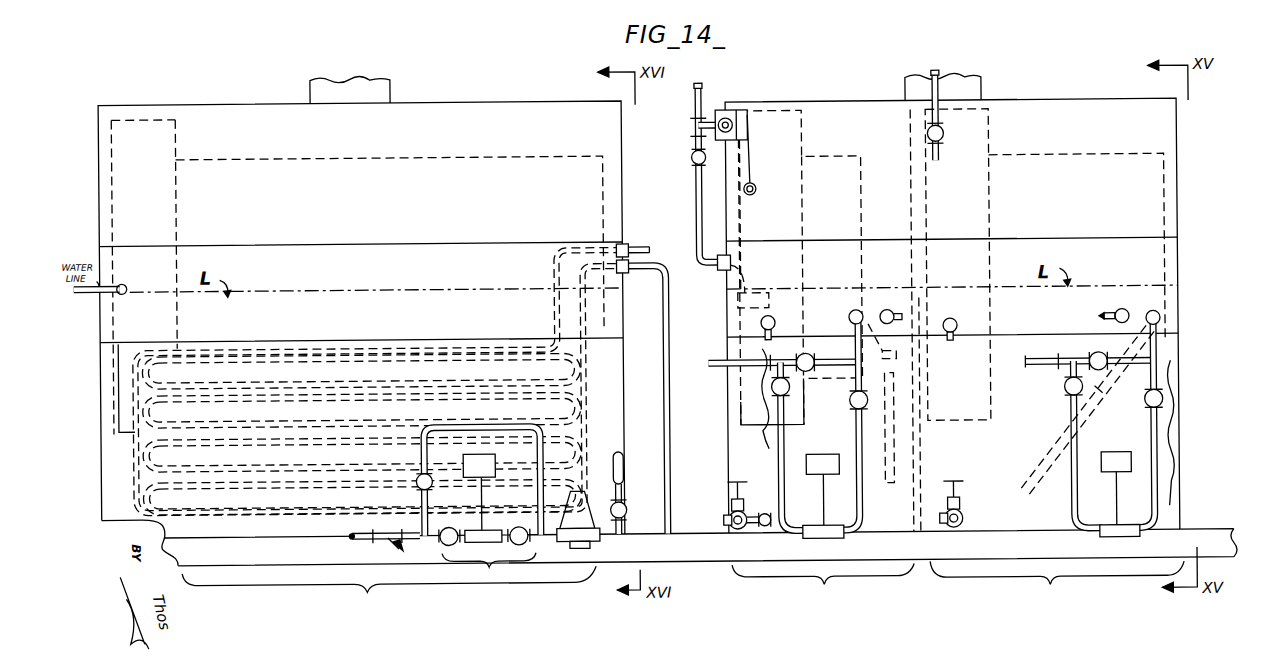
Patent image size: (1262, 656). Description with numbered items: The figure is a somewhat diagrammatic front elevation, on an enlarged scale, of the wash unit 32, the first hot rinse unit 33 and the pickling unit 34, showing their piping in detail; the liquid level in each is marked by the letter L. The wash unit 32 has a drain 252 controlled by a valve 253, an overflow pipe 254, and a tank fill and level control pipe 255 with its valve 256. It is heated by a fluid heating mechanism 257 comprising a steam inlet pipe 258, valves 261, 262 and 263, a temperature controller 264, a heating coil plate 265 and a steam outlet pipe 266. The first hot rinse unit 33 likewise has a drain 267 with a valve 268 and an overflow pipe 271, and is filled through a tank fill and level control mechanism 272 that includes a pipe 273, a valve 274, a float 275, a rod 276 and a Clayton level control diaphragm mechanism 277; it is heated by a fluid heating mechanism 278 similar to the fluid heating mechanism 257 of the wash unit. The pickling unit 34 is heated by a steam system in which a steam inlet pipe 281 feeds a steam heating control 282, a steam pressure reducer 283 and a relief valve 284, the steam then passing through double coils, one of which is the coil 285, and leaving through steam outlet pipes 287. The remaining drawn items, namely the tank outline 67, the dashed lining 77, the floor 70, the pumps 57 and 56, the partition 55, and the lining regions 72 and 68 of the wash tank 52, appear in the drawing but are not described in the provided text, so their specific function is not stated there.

The sulphuric acid pickle tank 67 is at (478, 101).
The tank lining 77 is at (401, 156).
The floor 70 is at (247, 529).
The double coil 285 is at (586, 391).
The steam outlet pipes 287 is at (652, 240).
The relief valve 284 is at (612, 457).
The steam pressure reducer 283 is at (598, 540).
The steam heating control 282 is at (478, 506).
The steam inlet pipe 281 is at (352, 540).
The hot detergent wash tank 52 is at (1058, 102).
The rinse compartment lining 72 is at (833, 156).
The wash compartment lining 68 is at (1055, 156).
The pipe 273 is at (696, 200).
The valve 274 is at (693, 162).
The tank fill and level control mechanism 272 is at (685, 110).
The Clayton level control diaphragm mechanism 277 is at (733, 109).
The rod 276 is at (757, 192).
The float 275 is at (738, 302).
The overflow pipe 271 is at (776, 323).
The fluid heating mechanism 278 is at (740, 404).
The pump 57 is at (892, 520).
The valve 268 is at (742, 483).
The drain 267 is at (766, 513).
The tank fill and level control pipe 255 is at (940, 92).
The valve 256 is at (946, 136).
The overflow pipe 254 is at (950, 342).
The partition 55 is at (905, 448).
The steam inlet pipe 258 is at (1040, 361).
The valve 261 is at (1063, 391).
The valve 263 is at (1147, 411).
The temperature controller 264 is at (1100, 466).
The pump 56 is at (930, 522).
The steam outlet pipe 266 is at (1104, 316).
The valve 262 is at (1100, 352).
The heating coil plate 265 is at (1043, 464).
The fluid heating mechanism 257 is at (1170, 438).
The valve 253 is at (960, 502).
The drain 252 is at (974, 509).
The pickling unit 34 is at (389, 599).
The first hot rinse unit 33 is at (823, 592).
The wash unit 32 is at (1066, 588).